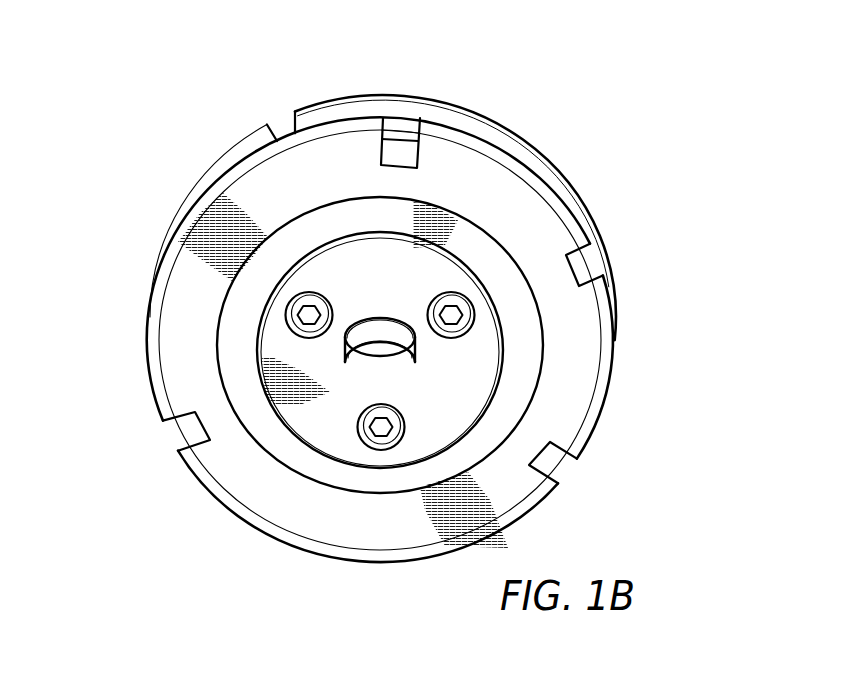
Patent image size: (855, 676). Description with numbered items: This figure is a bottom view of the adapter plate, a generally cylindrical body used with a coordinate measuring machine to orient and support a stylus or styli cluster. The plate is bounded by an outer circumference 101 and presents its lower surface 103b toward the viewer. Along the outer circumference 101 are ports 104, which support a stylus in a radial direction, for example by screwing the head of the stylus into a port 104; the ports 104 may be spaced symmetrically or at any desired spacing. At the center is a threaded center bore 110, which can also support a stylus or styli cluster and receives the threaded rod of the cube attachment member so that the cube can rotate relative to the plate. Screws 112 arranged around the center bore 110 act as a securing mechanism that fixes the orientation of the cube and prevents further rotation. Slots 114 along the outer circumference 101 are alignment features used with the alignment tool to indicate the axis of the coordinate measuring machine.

The outer circumference 101 is at (610, 287).
The lower surface 103b is at (521, 202).
The ports 104 is at (185, 436).
The center bore 110 is at (359, 359).
The screws 112 is at (396, 438).
The slots 114 is at (283, 130).